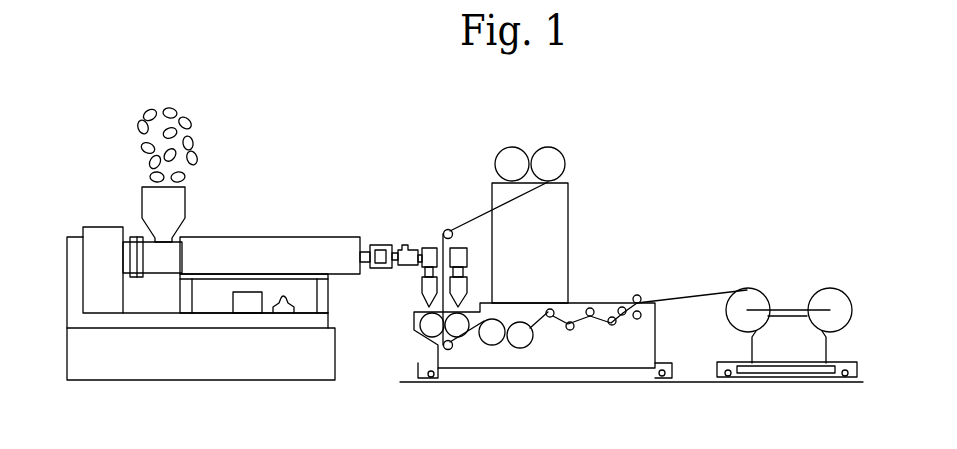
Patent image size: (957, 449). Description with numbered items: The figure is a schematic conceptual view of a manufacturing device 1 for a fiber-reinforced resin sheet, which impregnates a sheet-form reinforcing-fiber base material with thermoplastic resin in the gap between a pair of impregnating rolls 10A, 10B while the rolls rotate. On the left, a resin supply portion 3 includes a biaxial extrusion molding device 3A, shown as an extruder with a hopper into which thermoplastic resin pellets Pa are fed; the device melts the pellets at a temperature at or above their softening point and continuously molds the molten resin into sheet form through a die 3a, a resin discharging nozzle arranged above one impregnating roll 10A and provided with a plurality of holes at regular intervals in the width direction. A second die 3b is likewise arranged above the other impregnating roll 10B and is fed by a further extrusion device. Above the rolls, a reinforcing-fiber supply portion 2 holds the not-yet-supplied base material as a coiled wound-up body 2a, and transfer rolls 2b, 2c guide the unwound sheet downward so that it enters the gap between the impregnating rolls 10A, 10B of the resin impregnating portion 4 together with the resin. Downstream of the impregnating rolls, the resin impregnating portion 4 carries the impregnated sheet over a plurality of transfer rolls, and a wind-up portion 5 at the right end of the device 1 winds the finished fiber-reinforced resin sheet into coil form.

The manufacturing device 1 is at (345, 139).
The thermoplastic resin pellet Pa is at (193, 143).
The reinforcing-fiber supply portion 2 is at (526, 219).
The wound-up body 2a is at (507, 158).
The transfer roll 2b is at (558, 158).
The transfer roll 2c is at (447, 230).
The resin supply portion 3 is at (244, 267).
The biaxial extrusion molding device 3A is at (268, 253).
The die 3a is at (425, 294).
The die 3b is at (458, 288).
The resin impregnating portion 4 is at (602, 272).
The wind-up portion 5 is at (760, 277).
The impregnating roll 10A is at (427, 327).
The impregnating roll 10B is at (455, 325).